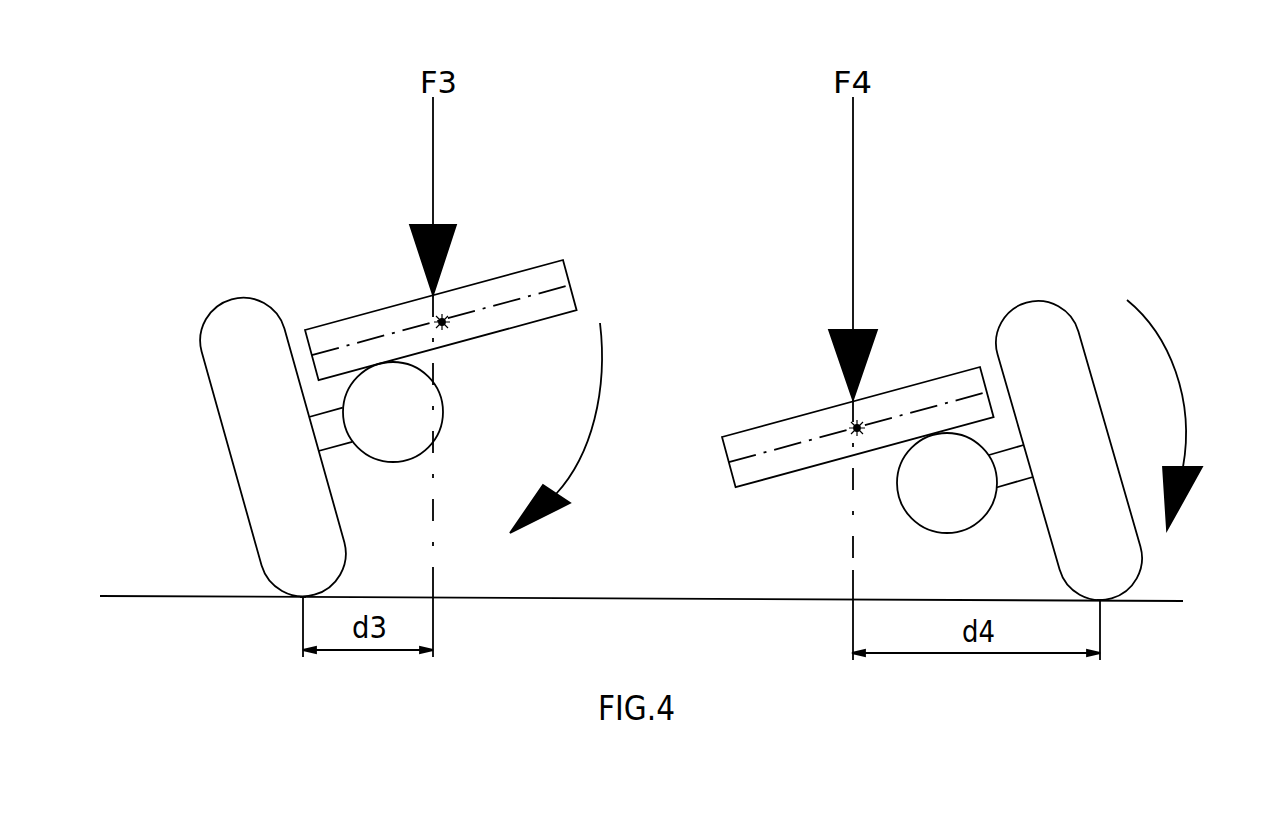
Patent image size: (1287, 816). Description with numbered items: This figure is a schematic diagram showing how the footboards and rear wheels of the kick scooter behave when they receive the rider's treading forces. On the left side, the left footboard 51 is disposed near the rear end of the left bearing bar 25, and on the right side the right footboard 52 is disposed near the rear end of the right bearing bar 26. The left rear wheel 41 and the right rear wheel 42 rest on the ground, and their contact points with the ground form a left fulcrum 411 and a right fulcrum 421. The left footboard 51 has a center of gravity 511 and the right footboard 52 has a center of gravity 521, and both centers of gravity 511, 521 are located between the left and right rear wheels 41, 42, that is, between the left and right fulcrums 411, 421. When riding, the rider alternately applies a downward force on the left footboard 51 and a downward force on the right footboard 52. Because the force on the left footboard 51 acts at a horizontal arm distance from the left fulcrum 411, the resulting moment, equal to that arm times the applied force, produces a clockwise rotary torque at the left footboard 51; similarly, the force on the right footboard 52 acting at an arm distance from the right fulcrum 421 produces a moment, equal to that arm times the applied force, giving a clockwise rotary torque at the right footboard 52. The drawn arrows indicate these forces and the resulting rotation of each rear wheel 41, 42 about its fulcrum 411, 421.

The left rear wheel 41 is at (263, 480).
The left fulcrum 411 is at (303, 597).
The left footboard 51 is at (508, 282).
The center of gravity 511 is at (442, 322).
The left bearing bar 25 is at (412, 412).
The right footboard 52 is at (780, 437).
The center of gravity 521 is at (860, 427).
The right bearing bar 26 is at (913, 505).
The right rear wheel 42 is at (1098, 570).
The right fulcrum 421 is at (1100, 602).